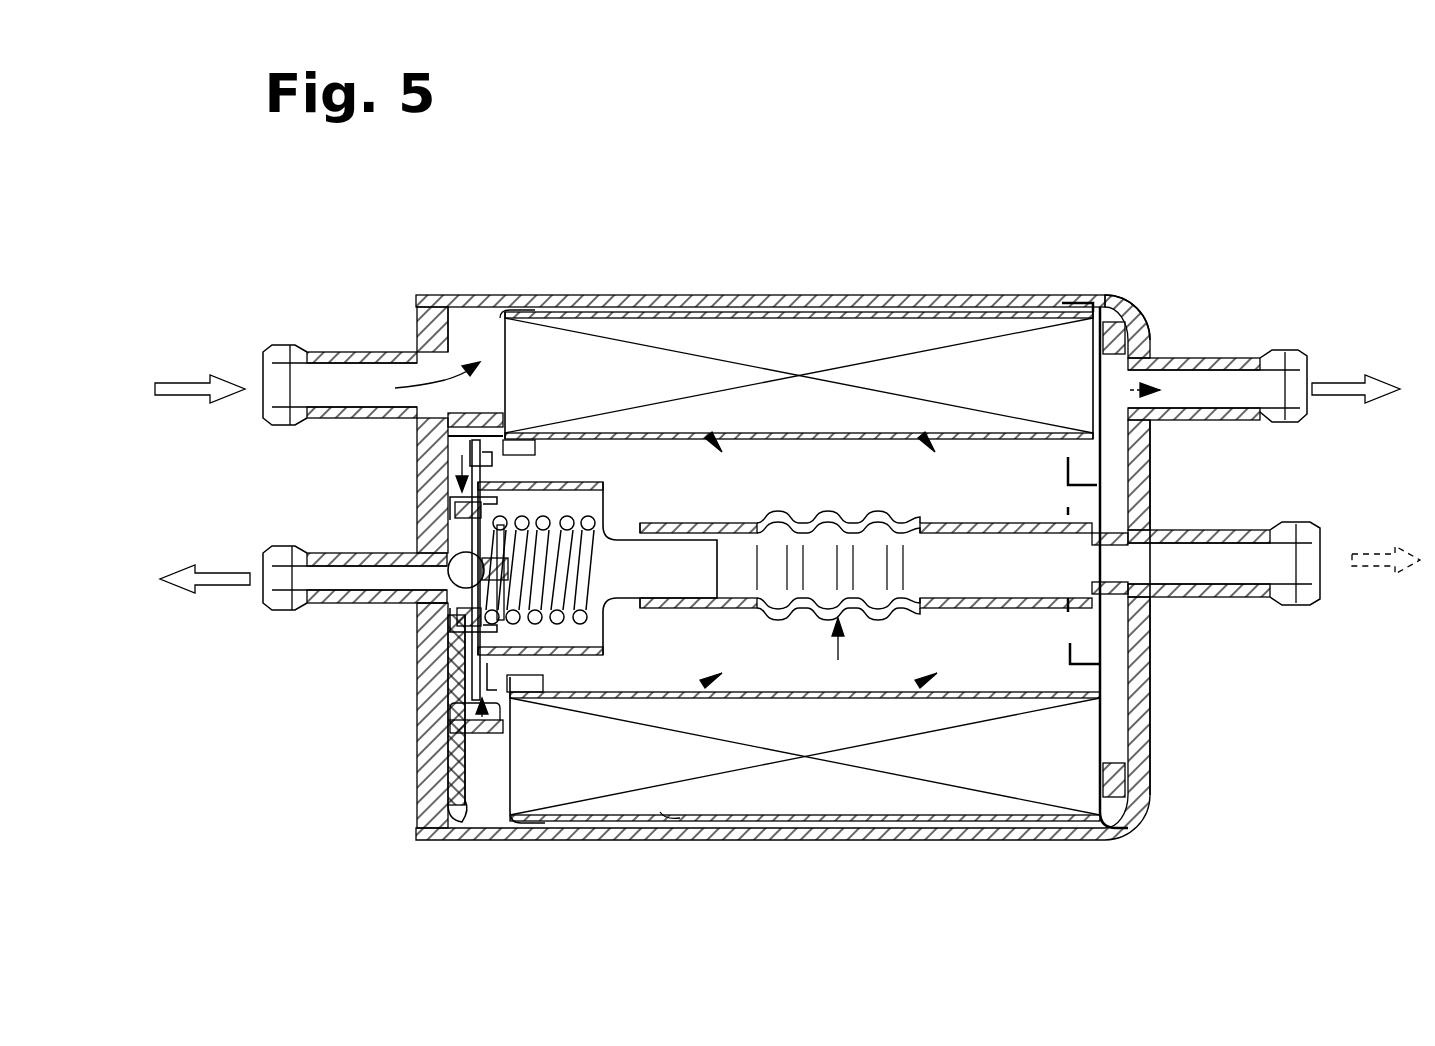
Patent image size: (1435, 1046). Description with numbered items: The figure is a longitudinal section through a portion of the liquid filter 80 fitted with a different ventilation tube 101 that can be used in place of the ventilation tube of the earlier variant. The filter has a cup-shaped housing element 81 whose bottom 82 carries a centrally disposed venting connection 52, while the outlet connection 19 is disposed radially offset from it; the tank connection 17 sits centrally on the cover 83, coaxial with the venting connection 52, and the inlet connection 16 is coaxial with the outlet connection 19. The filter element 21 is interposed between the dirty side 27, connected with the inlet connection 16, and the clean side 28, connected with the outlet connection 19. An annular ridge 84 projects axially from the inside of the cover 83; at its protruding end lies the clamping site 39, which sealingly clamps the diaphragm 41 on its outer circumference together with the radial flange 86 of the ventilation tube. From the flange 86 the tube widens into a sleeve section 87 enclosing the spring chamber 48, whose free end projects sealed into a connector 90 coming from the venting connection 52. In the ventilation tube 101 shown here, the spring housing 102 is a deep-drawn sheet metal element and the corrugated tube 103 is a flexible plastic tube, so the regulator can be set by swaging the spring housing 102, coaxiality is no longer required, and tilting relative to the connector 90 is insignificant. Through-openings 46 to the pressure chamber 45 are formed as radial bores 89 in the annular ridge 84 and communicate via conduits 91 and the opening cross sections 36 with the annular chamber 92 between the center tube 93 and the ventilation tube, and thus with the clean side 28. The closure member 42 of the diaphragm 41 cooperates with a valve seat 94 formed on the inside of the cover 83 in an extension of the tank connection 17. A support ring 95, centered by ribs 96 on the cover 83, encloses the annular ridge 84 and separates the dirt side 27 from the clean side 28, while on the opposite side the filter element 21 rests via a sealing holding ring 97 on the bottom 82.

The inlet connection 16 is at (283, 385).
The tank connection 17 is at (278, 595).
The outlet connection 19 is at (1292, 376).
The filter element 21 is at (943, 347).
The dirty side 27 is at (480, 318).
The clean side 28 is at (1117, 727).
The opening cross sections 36 is at (523, 665).
The clamping site 39 is at (472, 718).
The diaphragm 41 is at (452, 660).
The closure member 42 is at (417, 607).
The pressure chamber 45 is at (452, 556).
The through-openings 46 is at (470, 450).
The spring chamber 48 is at (588, 504).
The venting connection 52 is at (1295, 550).
The liquid filter 80 is at (1082, 258).
The cup-shaped housing element 81 is at (813, 305).
The bottom 82 is at (1140, 660).
The cover 83 is at (445, 760).
The annular ridge 84 is at (452, 707).
The radial flange 86 is at (442, 737).
The widened sleeve section 87 is at (608, 657).
The radial bores 89 is at (460, 467).
The connector 90 is at (1126, 614).
The conduits 91 is at (503, 440).
The annular chamber 92 is at (660, 812).
The center tube 93 is at (1047, 700).
The valve seat 94 is at (442, 604).
The support ring 95 is at (442, 798).
The ribs 96 is at (462, 436).
The sealing holding ring 97 is at (1128, 338).
The ventilation tube 101 is at (838, 660).
The spring housing 102 is at (648, 525).
The corrugated tube 103 is at (912, 608).